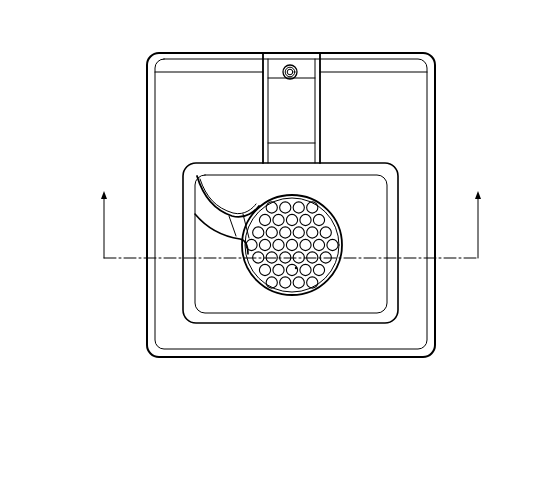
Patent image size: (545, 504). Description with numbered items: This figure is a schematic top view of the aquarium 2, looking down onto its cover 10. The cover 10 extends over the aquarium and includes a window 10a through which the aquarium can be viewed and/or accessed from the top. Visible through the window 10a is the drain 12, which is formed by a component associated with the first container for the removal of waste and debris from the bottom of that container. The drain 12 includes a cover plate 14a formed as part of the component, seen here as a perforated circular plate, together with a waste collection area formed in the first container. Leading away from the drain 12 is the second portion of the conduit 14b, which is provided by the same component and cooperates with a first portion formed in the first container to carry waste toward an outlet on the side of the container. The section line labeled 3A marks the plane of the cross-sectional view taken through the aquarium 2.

The aquarium 2 is at (122, 55).
The cover 10 is at (434, 102).
The window 10a is at (353, 169).
The drain 12 is at (288, 242).
The cover plate 14a is at (296, 268).
The second portion of the conduit 14b is at (205, 215).
The section line 3A- 3A is at (289, 209).